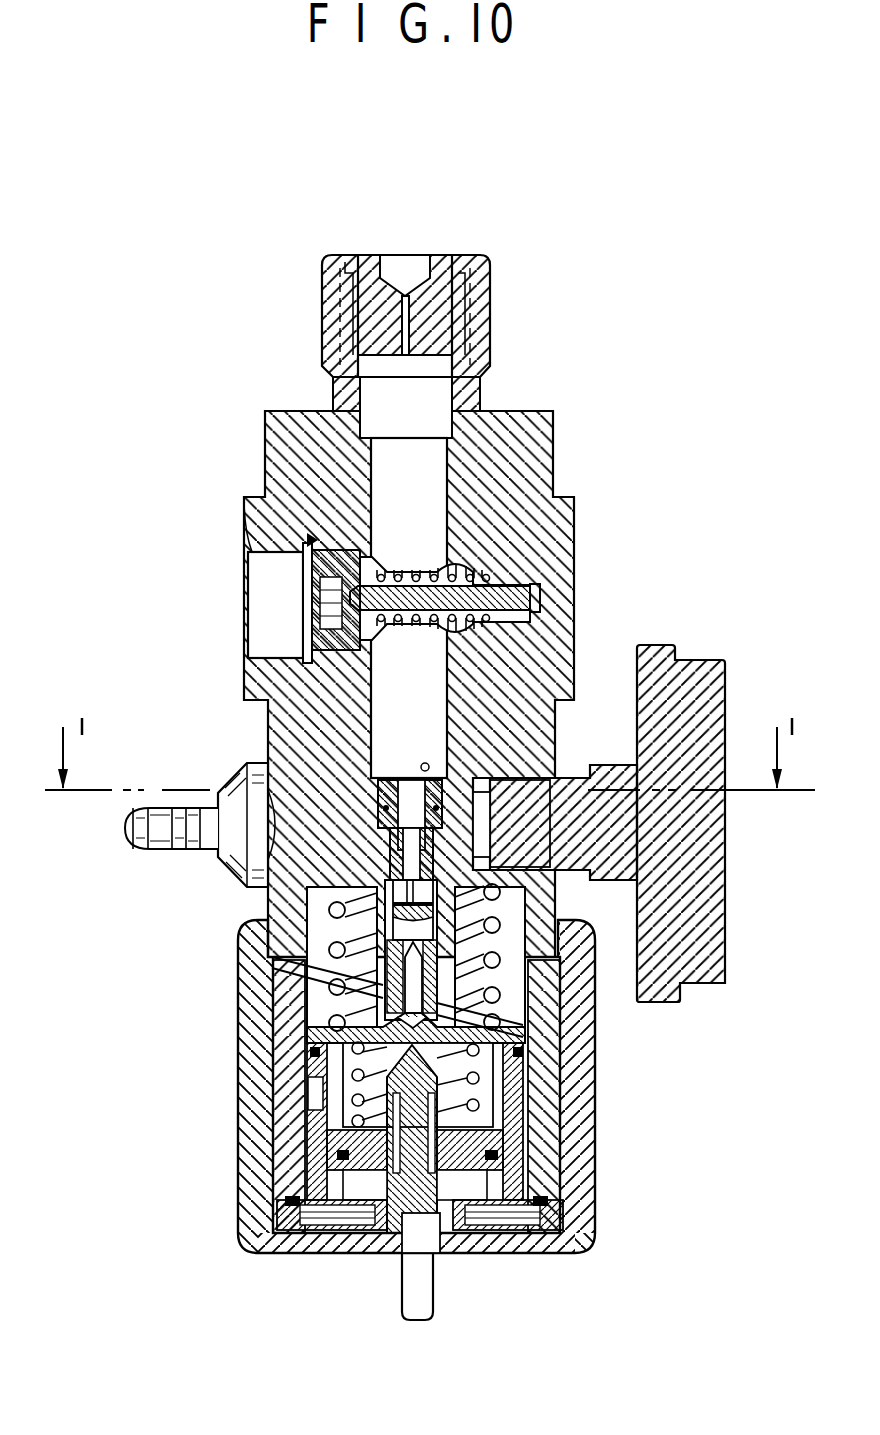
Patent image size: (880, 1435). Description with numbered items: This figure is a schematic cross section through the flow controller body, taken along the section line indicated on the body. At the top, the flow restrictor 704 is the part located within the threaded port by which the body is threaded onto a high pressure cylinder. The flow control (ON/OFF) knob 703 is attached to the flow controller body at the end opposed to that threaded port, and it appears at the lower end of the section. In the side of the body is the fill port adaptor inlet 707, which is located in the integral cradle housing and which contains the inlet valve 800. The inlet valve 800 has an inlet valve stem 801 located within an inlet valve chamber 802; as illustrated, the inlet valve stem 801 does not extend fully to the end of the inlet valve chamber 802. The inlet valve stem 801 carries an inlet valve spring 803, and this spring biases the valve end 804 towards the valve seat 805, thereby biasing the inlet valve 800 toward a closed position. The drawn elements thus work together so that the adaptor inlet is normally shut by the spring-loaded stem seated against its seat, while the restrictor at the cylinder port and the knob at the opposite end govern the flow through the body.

The flow restrictor 704 is at (402, 232).
The valve seat 805 is at (262, 483).
The inlet valve spring 803 is at (522, 570).
The inlet valve 800 is at (519, 562).
The inlet valve stem 801 is at (540, 600).
The inlet valve chamber 802 is at (470, 644).
The fill port adaptor inlet 707 is at (305, 588).
The valve end 804 is at (308, 608).
The flow control (ON/OFF) knob 703 is at (608, 1196).